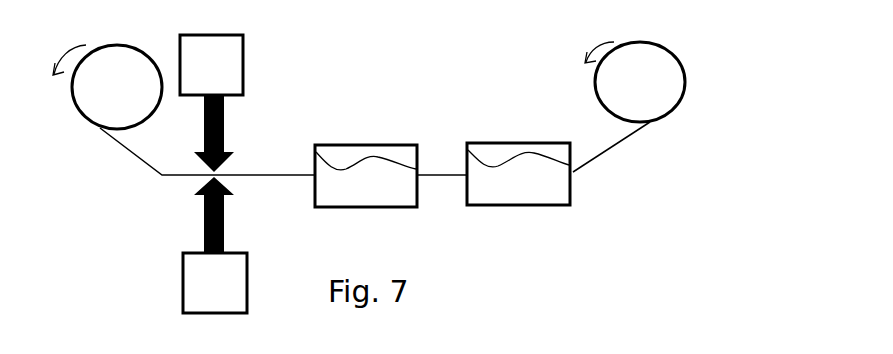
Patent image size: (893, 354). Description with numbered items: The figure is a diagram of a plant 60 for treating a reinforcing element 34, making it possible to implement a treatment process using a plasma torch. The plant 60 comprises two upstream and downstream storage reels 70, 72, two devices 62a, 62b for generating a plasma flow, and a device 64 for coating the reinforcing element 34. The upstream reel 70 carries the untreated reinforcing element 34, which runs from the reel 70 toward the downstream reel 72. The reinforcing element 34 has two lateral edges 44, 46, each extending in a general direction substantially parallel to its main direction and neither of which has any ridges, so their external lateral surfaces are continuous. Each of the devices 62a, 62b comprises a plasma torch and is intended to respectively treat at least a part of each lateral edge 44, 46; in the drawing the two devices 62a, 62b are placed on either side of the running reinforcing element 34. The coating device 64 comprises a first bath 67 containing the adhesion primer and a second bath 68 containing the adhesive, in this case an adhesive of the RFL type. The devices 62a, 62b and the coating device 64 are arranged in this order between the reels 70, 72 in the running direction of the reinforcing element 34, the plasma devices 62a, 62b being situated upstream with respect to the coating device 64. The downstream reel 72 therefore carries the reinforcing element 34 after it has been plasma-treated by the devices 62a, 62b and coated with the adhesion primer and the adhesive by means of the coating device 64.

The upstream storage reel 70 is at (105, 98).
The downstream storage reel 72 is at (628, 95).
The device for generating a plasma flow 62a is at (227, 76).
The device for generating a plasma flow 62b is at (199, 296).
The first bath 67 is at (346, 196).
The second bath 68 is at (511, 191).
The lateral edge 46 is at (192, 176).
The lateral edge 44 is at (242, 175).
The reinforcing element 34 is at (446, 172).
The plant 60 is at (680, 143).
The device for coating the reinforcing element 64 is at (448, 236).